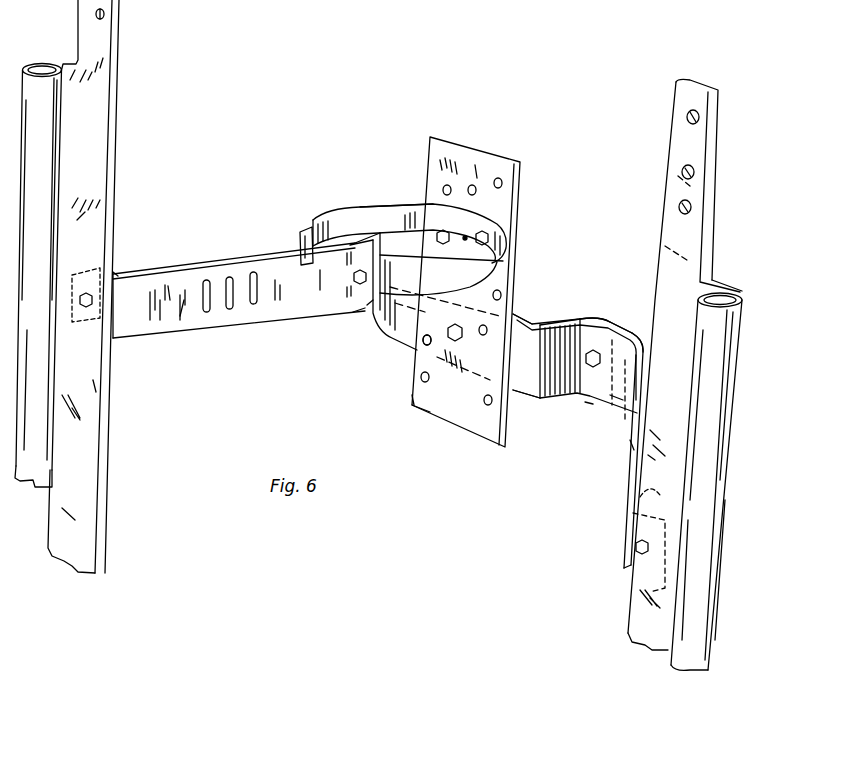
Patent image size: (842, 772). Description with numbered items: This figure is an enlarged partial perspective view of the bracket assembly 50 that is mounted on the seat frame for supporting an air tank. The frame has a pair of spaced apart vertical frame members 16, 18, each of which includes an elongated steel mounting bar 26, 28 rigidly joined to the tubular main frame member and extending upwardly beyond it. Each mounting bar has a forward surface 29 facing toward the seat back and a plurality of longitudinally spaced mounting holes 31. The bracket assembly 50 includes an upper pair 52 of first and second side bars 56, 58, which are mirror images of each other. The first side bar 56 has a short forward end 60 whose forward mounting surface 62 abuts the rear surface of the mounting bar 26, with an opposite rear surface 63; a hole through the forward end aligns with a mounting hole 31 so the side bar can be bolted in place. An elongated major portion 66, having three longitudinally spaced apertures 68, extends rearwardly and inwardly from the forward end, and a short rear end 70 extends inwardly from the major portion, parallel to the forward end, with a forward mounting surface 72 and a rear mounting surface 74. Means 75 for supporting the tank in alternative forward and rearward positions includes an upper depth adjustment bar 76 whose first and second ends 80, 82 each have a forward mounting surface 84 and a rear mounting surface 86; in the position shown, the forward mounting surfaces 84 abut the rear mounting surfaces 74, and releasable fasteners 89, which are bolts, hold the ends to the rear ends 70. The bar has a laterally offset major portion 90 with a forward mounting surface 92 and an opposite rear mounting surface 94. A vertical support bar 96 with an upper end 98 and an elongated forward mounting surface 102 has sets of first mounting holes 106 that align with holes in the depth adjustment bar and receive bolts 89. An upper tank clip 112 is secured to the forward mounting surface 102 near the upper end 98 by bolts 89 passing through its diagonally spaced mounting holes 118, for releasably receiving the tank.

The vertical frame member 16 is at (710, 460).
The vertical frame member 18 is at (47, 131).
The mounting bar 26 is at (643, 616).
The mounting bar 28 is at (80, 522).
The forward surface 29 is at (93, 387).
The mounting holes 31 is at (105, 14).
The bracket assembly 50 is at (280, 208).
The upper pair of first and second side bars 52 is at (220, 334).
The first side bar 56 is at (632, 467).
The second side bar 58 is at (182, 318).
The forward end 60 is at (624, 569).
The forward mounting surface 62 is at (96, 330).
The rear surface 63 is at (118, 272).
The major portion 66 is at (167, 290).
The apertures 68 is at (206, 282).
The rear end 70 is at (353, 312).
The forward mounting surface 72 is at (367, 305).
The rear mounting surface 74 is at (632, 336).
The means for supporting the tank in alternative forward and rearward positions 75 is at (544, 258).
The upper depth adjustment bar 76 is at (561, 324).
The first end 80 is at (588, 318).
The second end 82 is at (368, 243).
The forward mounting surface 84 is at (640, 371).
The rear mounting surface 86 is at (614, 318).
The releasable fasteners 89 is at (437, 233).
The major portion 90 is at (530, 388).
The forward mounting surface 92 is at (532, 360).
The rear mounting surface 94 is at (522, 316).
The vertical support bar 96 is at (411, 407).
The upper end 98 is at (505, 170).
The forward mounting surface 102 is at (410, 399).
The first mounting holes 106 is at (423, 342).
The upper tank clip 112 is at (347, 222).
The mounting holes 118 is at (465, 238).